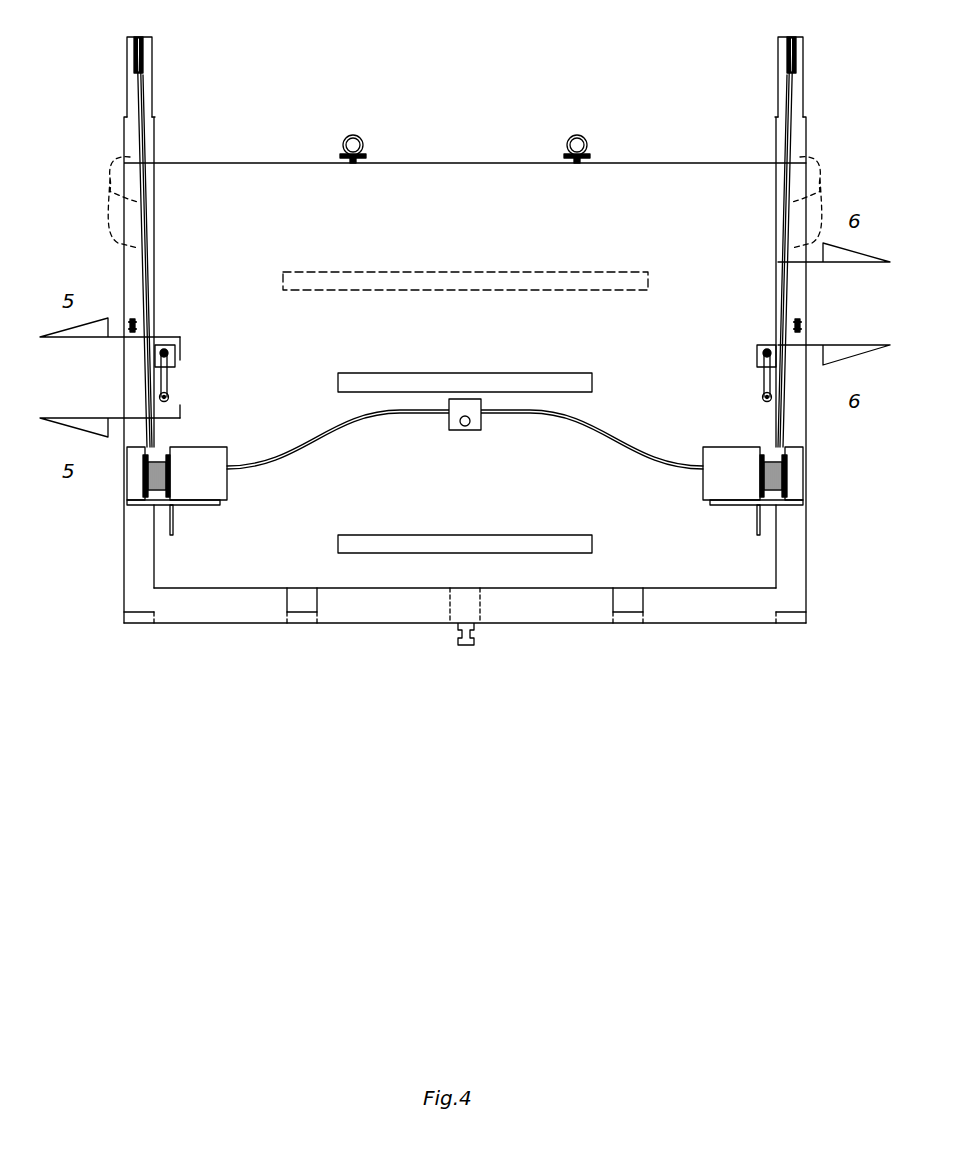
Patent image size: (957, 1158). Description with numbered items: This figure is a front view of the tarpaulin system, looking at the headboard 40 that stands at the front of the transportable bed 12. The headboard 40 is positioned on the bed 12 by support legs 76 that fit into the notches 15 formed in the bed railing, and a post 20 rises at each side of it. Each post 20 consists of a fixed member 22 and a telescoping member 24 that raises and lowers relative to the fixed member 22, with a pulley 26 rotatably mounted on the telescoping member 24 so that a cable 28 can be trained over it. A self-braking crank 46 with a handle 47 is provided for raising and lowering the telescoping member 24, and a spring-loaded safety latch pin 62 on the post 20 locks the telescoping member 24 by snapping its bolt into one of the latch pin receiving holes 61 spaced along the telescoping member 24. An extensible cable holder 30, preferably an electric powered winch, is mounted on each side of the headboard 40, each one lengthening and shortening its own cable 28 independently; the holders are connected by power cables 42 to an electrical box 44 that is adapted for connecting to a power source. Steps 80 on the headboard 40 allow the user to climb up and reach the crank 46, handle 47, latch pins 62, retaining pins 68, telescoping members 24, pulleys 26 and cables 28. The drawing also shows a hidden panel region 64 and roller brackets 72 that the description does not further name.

The transportable bed 12 is at (400, 613).
The notches 15 is at (142, 620).
The post 20 is at (148, 187).
The fixed member 22 is at (128, 136).
The telescoping member 24 is at (130, 92).
The pulley 26 is at (141, 40).
The cable 28 is at (148, 228).
The extensible cable holder 30 is at (215, 482).
The headboard 40 is at (475, 361).
The power cables 42 is at (333, 424).
The electrical box 44 is at (473, 430).
The self-braking crank 46 is at (176, 355).
The handle 47 is at (167, 378).
The latch pin receiving holes 61 is at (112, 189).
The safety latch pin 62 is at (133, 320).
The hidden panel 64 is at (457, 290).
The retaining pins 68 is at (360, 138).
The roller bracket 72 is at (338, 163).
The support legs 76 is at (137, 600).
The steps 80 is at (575, 373).